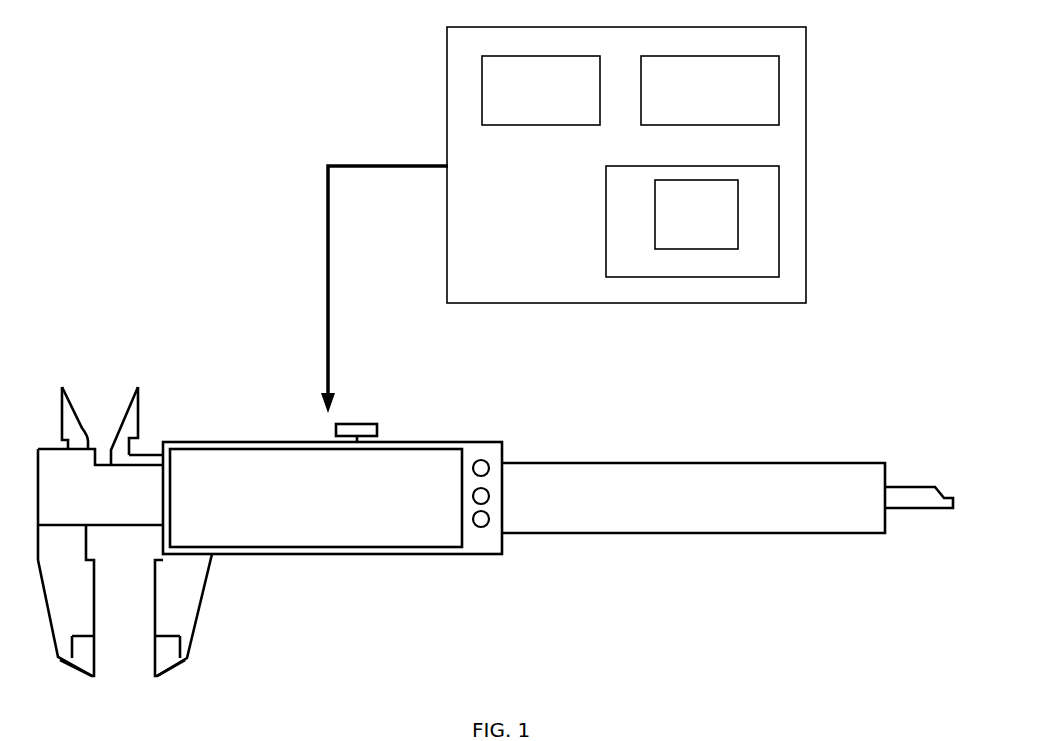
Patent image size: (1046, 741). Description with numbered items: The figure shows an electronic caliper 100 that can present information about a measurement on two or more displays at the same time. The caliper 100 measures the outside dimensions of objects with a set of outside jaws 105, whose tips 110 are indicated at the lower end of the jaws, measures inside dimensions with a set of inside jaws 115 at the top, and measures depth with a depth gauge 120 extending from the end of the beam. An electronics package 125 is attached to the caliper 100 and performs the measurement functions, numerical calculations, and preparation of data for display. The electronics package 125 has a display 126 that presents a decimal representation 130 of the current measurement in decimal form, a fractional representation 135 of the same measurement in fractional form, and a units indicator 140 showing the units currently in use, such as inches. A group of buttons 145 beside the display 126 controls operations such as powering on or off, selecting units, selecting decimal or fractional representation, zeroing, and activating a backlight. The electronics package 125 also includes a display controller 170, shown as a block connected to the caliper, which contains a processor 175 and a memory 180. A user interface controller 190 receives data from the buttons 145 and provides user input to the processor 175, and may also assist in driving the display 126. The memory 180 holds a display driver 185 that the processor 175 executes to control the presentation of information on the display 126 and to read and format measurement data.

The electronic caliper 100 is at (162, 136).
The outside jaws 105 is at (190, 586).
The lower jaw tips 110 is at (160, 686).
The inside jaws 115 is at (140, 382).
The depth gauge 120 is at (923, 483).
The electronics package 125 is at (472, 442).
The display 126 is at (444, 463).
The decimal representation 130 is at (243, 462).
The fractional representation 135 is at (232, 530).
The units indicator 140 is at (410, 507).
The buttons 145 is at (489, 463).
The display controller 170 is at (563, 220).
The processor 175 is at (541, 90).
The memory 180 is at (692, 211).
The display driver 185 is at (696, 214).
The user interface controller 190 is at (710, 90).